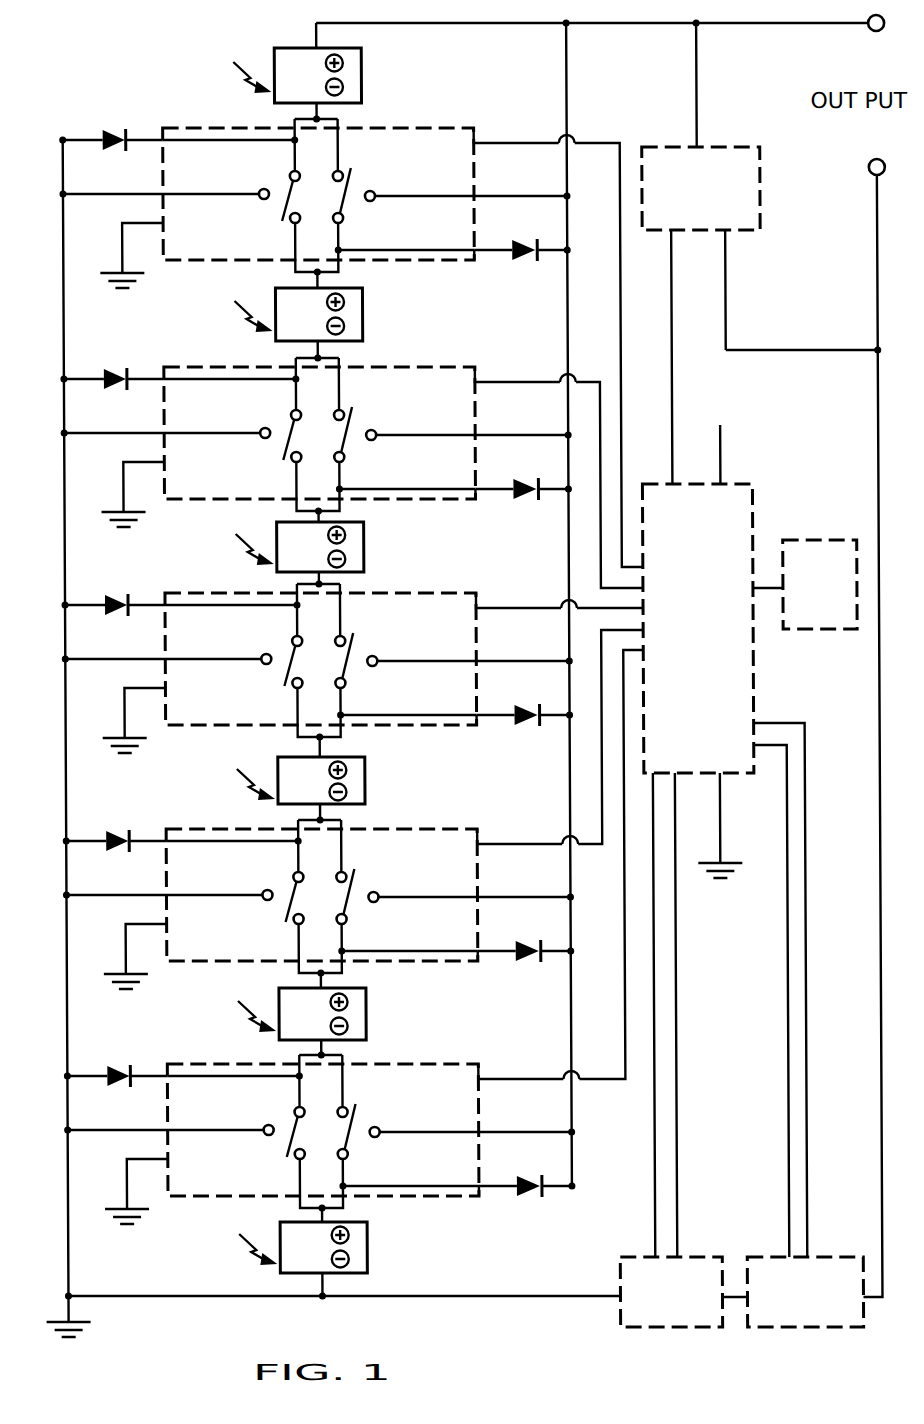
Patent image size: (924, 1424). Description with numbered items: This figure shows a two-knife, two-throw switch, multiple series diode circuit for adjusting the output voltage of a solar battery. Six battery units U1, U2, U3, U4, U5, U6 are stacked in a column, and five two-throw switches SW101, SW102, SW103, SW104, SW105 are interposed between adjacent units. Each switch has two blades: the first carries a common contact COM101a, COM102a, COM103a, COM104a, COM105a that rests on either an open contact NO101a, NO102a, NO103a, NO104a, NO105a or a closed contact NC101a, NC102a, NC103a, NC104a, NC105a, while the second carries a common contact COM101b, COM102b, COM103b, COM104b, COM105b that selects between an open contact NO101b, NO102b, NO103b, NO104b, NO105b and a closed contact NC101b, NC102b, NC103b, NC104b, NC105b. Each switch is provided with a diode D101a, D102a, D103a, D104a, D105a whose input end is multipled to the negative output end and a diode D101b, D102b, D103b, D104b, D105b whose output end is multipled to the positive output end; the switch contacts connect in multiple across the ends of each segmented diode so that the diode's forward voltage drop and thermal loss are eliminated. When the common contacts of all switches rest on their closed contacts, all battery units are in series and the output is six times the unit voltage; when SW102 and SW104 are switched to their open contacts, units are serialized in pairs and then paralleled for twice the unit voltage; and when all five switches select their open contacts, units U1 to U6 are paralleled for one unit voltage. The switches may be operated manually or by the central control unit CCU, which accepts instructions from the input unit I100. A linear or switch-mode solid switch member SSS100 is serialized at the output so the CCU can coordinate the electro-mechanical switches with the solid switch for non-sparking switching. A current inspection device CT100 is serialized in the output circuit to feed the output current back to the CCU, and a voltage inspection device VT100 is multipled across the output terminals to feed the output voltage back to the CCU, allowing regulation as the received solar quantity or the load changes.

The battery unit U1 is at (297, 83).
The battery unit U2 is at (298, 323).
The battery unit U3 is at (300, 553).
The battery unit U4 is at (301, 788).
The battery unit U5 is at (302, 1021).
The battery unit U6 is at (303, 1259).
The switch SW101 is at (340, 168).
The switch SW102 is at (342, 407).
The switch SW103 is at (343, 633).
The switch SW104 is at (344, 869).
The switch SW105 is at (345, 1104).
The diode D101a is at (111, 125).
The diode D102a is at (112, 364).
The diode D103a is at (113, 590).
The diode D104a is at (115, 826).
The diode D105a is at (116, 1061).
The diode D101b is at (522, 266).
The diode D102b is at (523, 505).
The diode D103b is at (525, 731).
The diode D104b is at (526, 967).
The diode D105b is at (527, 1200).
The common contact COM101a is at (231, 179).
The common contact COM102a is at (232, 418).
The common contact COM103a is at (233, 644).
The common contact COM104a is at (234, 880).
The common contact COM105a is at (235, 1115).
The common contact COM101b is at (403, 214).
The common contact COM102b is at (404, 453).
The common contact COM103b is at (405, 679).
The common contact COM104b is at (406, 915).
The common contact COM105b is at (408, 1150).
The normally open contact NO101a is at (164, 206).
The normally open contact NO102a is at (166, 445).
The normally open contact NO103a is at (167, 671).
The normally open contact NO104a is at (168, 907).
The normally open contact NO105a is at (169, 1142).
The normally open contact NO101b is at (468, 187).
The normally open contact NO102b is at (469, 426).
The normally open contact NO103b is at (470, 652).
The normally open contact NO104b is at (471, 888).
The normally open contact NO105b is at (473, 1123).
The normally closed contact NC101a is at (200, 250).
The normally closed contact NC102a is at (201, 489).
The normally closed contact NC103a is at (202, 715).
The normally closed contact NC104a is at (204, 951).
The normally closed contact NC105a is at (205, 1186).
The normally closed contact NC101b is at (488, 347).
The normally closed contact NC102b is at (488, 477).
The normally closed contact NC103b is at (489, 619).
The normally closed contact NC104b is at (489, 756).
The normally closed contact NC105b is at (490, 883).
The voltage inspection device VT100 is at (702, 315).
The central control unit CCU is at (724, 826).
The input unit I100 is at (820, 584).
The inspection device CT100 is at (683, 1292).
The solid switch member SSS100 is at (805, 1292).